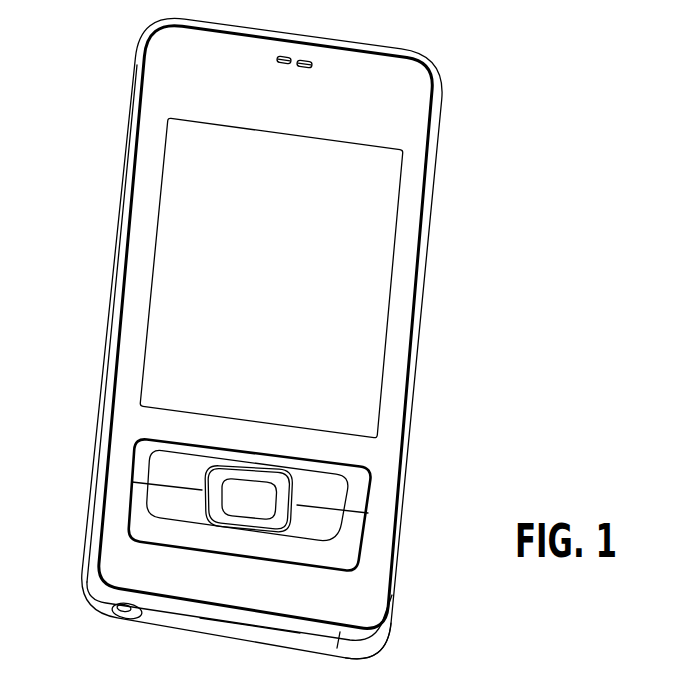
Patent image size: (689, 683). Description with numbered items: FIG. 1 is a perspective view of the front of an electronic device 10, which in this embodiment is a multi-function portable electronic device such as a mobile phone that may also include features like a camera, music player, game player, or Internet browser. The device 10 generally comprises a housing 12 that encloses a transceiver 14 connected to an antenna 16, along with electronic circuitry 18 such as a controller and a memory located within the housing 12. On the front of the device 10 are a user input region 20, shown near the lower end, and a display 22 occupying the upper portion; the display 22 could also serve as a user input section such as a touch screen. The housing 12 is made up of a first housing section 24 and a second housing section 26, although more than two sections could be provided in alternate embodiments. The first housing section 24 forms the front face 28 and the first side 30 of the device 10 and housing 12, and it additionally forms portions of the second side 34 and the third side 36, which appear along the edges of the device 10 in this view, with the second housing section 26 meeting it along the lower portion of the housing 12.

The device 10 is at (96, 26).
The housing 12 is at (162, 24).
The transceiver 14 is at (402, 128).
The antenna 16 is at (403, 82).
The electronic circuitry 18 is at (380, 455).
The user input region 20 is at (370, 490).
The display 22 is at (170, 193).
The first housing section 24 is at (397, 578).
The second housing section 26 is at (297, 645).
The front face 28 is at (122, 420).
The first side 30 is at (380, 623).
The second side 34 is at (250, 632).
The third side 36 is at (83, 540).